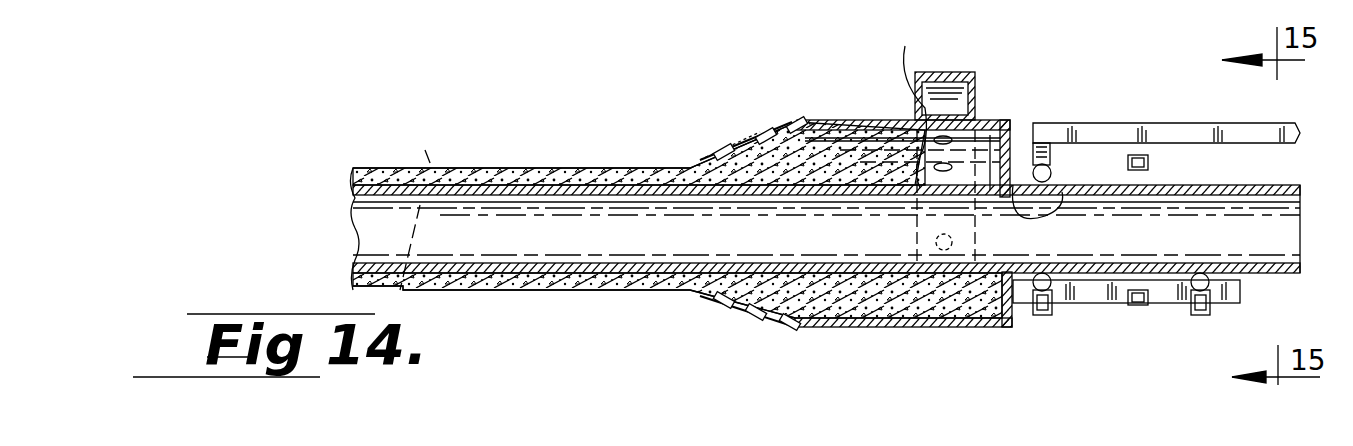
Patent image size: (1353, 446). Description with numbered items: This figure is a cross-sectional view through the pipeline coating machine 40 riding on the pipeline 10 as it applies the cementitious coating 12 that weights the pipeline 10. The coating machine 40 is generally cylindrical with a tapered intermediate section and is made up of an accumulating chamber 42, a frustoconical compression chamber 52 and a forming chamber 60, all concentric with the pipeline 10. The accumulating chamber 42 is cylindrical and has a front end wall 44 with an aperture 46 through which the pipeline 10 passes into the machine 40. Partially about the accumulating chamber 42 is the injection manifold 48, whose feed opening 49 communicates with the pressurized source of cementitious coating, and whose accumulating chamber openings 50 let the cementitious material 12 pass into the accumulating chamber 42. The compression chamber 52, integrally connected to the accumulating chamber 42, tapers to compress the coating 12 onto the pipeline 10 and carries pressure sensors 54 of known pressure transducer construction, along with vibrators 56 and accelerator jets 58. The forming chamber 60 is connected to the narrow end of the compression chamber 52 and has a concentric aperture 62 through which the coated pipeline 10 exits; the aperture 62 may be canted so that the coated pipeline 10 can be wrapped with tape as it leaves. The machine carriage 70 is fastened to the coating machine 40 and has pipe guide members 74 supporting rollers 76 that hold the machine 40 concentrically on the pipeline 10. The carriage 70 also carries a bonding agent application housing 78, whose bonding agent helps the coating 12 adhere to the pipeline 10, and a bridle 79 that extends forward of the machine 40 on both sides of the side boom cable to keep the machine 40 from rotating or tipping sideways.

The pipeline 10 is at (1233, 190).
The cementitious coating 12 is at (378, 176).
The pipeline coating machine 40 is at (838, 98).
The accumulating chamber 42 is at (860, 120).
The front end wall 44 is at (1015, 172).
The aperture 46 is at (1052, 212).
The injection manifold 48 is at (986, 130).
The feed opening 49 is at (945, 72).
The accumulating chamber openings 50 is at (917, 140).
The compression chamber 52 is at (748, 136).
The pressure sensors 54 is at (766, 130).
The vibrators 56 is at (716, 148).
The accelerator jets 58 is at (797, 122).
The forming chamber 60 is at (528, 175).
The aperture 62 is at (419, 206).
The machine carriage 70 is at (1115, 302).
The pipe guide members 74 is at (1040, 146).
The rollers 76 is at (1052, 170).
The bonding agent application housing 78 is at (1190, 292).
The bridle 79 is at (1196, 130).